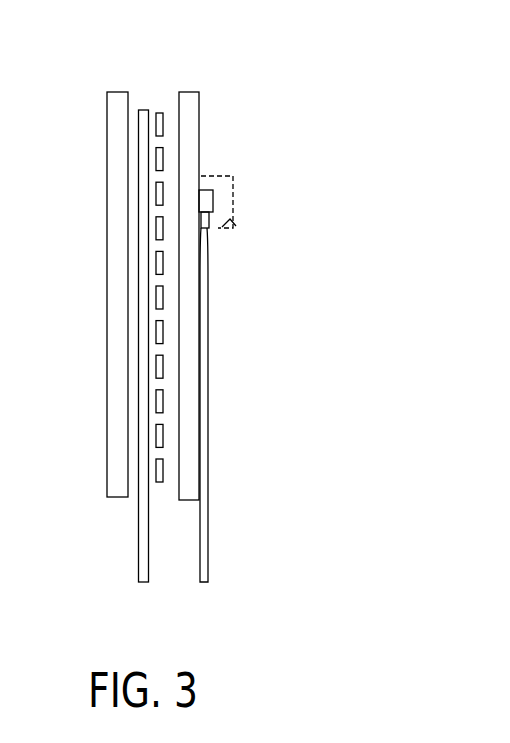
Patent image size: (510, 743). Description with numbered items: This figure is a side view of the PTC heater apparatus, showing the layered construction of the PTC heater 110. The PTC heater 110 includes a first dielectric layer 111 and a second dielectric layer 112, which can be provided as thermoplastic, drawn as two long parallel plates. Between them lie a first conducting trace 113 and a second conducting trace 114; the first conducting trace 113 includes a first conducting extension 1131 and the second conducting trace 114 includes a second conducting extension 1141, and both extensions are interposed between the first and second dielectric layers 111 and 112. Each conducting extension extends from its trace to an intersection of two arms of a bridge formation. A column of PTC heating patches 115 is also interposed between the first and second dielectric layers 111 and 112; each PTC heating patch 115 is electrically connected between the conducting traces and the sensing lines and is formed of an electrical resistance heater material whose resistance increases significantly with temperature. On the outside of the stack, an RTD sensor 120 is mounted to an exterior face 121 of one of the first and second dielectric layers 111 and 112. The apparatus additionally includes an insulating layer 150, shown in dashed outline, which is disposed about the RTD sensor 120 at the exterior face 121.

The PTC heater 110 is at (86, 134).
The first dielectric layer 111 is at (107, 103).
The second dielectric layer 112 is at (199, 98).
The first conducting trace 113 is at (120, 545).
The second conducting trace 114 is at (144, 346).
The first conducting extension 1131 is at (148, 148).
The second conducting extension 1141 is at (212, 297).
The PTC heating patches 115 is at (163, 185).
The RTD sensor 120 is at (207, 201).
The exterior face 121 is at (197, 448).
The insulating layer 150 is at (245, 229).